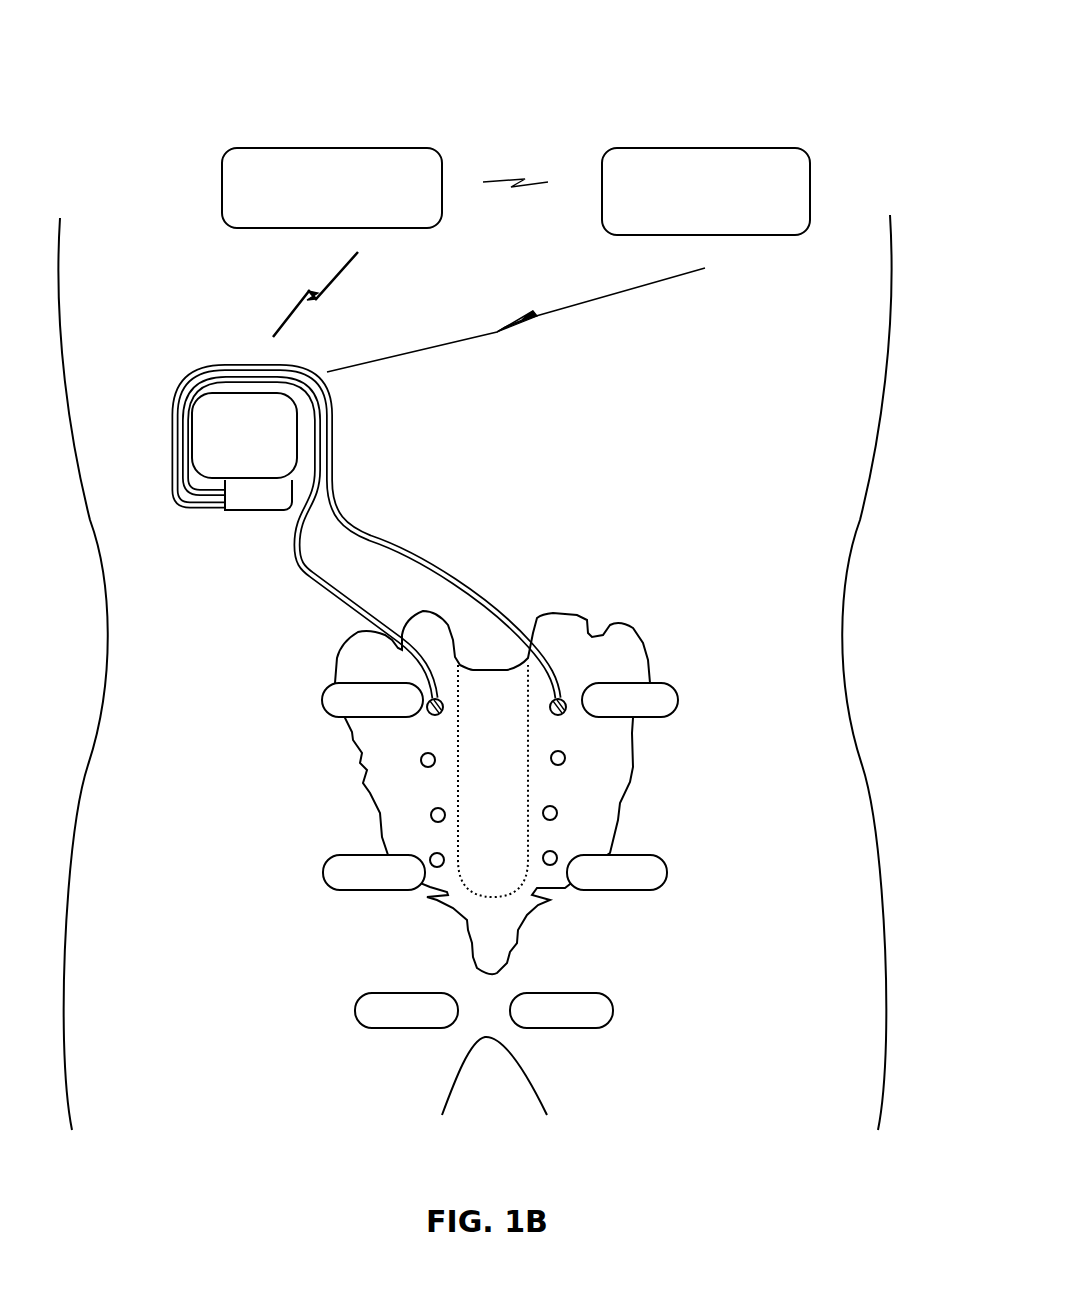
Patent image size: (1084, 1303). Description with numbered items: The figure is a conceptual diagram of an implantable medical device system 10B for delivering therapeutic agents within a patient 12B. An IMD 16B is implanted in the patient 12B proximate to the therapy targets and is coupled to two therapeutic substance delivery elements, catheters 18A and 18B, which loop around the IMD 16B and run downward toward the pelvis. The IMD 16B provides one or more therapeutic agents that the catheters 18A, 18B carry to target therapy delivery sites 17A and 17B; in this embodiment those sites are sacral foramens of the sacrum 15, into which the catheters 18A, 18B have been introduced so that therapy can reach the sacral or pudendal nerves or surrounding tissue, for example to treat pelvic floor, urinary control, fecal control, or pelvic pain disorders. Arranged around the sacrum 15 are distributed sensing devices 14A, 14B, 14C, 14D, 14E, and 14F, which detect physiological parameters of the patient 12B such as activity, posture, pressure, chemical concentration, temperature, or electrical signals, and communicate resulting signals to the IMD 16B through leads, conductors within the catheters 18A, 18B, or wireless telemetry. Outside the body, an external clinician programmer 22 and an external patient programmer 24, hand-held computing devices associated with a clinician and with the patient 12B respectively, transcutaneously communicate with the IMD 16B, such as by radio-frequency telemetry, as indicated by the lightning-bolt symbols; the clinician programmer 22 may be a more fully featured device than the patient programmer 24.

The implantable medical device system 10B is at (643, 74).
The patient 12B is at (845, 591).
The sensing device 14A is at (322, 700).
The sensing device 14B is at (678, 702).
The sensing device 14C is at (323, 872).
The sensing device 14D is at (667, 872).
The sensing device 14E is at (355, 1010).
The sensing device 14F is at (613, 1010).
The sacrum 15 is at (662, 753).
The implantable medical device 16B is at (255, 512).
The target therapy delivery site 17A is at (408, 722).
The target therapy delivery site 17B is at (578, 677).
The catheter 18A is at (300, 561).
The catheter 18B is at (358, 530).
The clinician programmer 22 is at (273, 148).
The patient programmer 24 is at (772, 235).